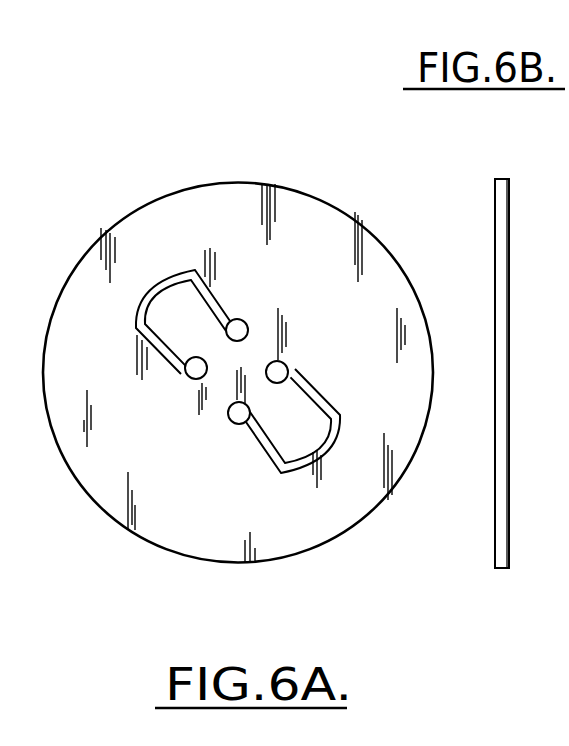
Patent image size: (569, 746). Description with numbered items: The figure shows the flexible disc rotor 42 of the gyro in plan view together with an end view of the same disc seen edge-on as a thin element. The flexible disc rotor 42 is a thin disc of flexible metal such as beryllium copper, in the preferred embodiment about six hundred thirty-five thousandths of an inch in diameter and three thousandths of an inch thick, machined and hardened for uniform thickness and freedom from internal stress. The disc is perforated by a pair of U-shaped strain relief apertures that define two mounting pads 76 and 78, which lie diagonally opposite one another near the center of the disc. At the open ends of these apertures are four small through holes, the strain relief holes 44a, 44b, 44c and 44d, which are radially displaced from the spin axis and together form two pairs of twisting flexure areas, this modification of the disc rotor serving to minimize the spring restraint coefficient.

In FIG. 6A, the flexible disc rotor 42 is at (177, 191).
In FIG. 6B, the flexible disc rotor 42 is at (508, 179).
In FIG. 6A, the mounting pad 76 is at (205, 332).
In FIG. 6A, the mounting pad 78 is at (305, 432).
In FIG. 6A, the strain relief hole 44a is at (285, 364).
In FIG. 6A, the strain relief hole 44b is at (236, 424).
In FIG. 6A, the strain relief hole 44c is at (188, 376).
In FIG. 6A, the strain relief hole 44d is at (244, 321).